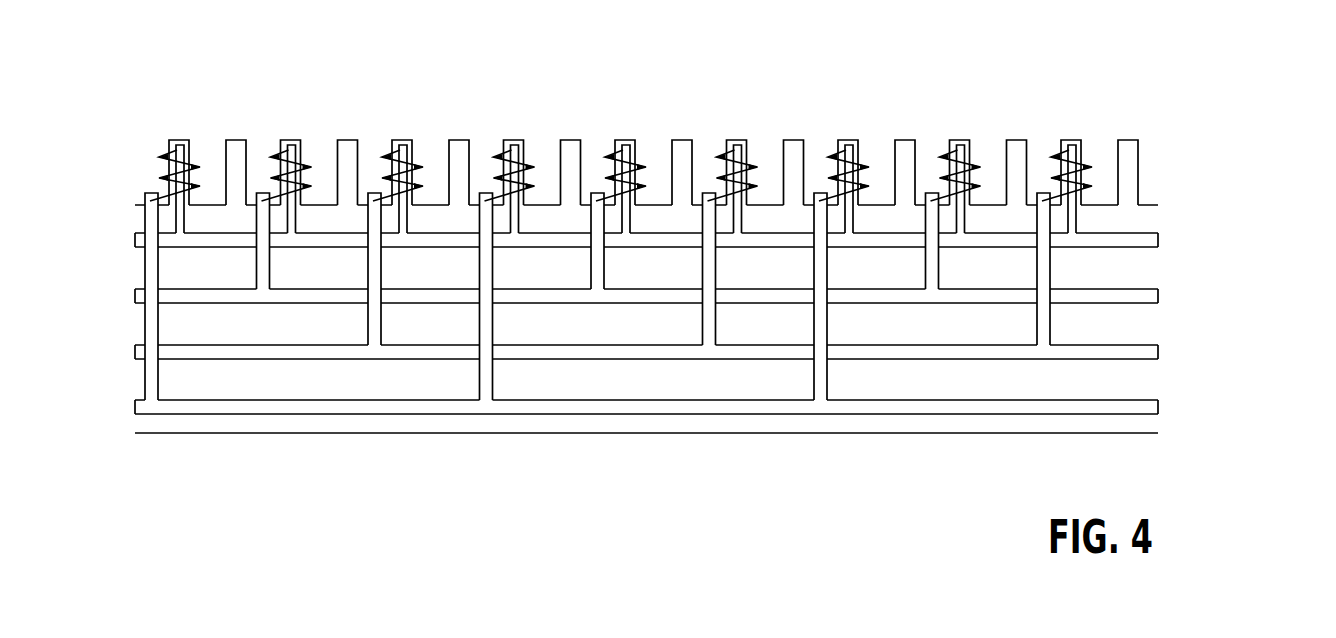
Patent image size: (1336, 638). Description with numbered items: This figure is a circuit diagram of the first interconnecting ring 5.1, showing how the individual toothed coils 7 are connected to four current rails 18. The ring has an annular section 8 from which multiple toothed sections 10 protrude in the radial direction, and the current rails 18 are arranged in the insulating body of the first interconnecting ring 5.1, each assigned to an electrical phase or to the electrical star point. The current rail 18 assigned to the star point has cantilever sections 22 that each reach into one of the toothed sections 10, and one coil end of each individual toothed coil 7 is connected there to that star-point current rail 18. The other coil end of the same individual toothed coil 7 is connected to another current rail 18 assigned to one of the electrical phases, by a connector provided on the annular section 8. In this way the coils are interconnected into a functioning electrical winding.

The first interconnecting ring 5.1 is at (1200, 339).
The current rails 18 is at (1160, 243).
The toothed sections 10 is at (1127, 133).
The cantilever sections 22 is at (183, 140).
The individual toothed coils 7 is at (170, 176).
The annular section 8 is at (192, 427).